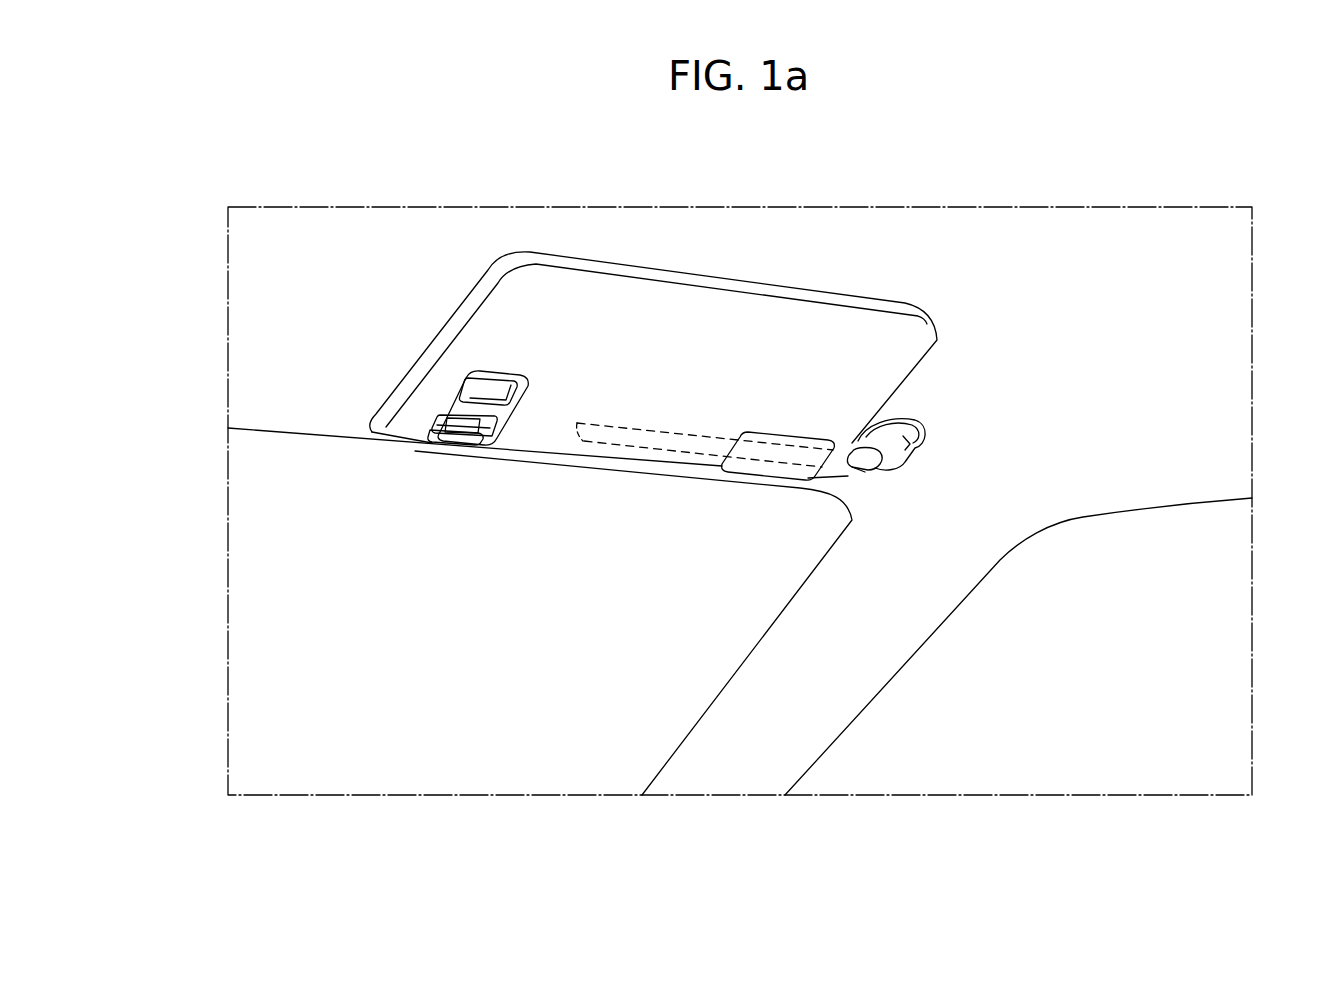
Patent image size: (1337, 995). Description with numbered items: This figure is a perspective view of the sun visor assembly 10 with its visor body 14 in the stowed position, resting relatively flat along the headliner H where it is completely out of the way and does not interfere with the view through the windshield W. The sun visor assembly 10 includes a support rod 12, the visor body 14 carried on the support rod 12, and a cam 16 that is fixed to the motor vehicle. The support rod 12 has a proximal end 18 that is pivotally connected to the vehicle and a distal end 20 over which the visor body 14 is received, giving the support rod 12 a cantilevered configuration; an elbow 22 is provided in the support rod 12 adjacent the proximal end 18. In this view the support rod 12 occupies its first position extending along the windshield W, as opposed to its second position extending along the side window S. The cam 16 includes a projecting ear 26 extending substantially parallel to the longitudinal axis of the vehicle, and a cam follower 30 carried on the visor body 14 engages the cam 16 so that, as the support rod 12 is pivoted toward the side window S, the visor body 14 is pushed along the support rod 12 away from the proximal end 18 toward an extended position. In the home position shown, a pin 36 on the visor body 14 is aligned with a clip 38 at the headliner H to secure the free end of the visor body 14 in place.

The sun visor assembly 10 is at (968, 290).
The support rod 12 is at (820, 478).
The visor body 14 is at (658, 322).
The cam 16 is at (903, 440).
The proximal end 18 is at (878, 453).
The distal end 20 is at (585, 436).
The elbow 22 is at (860, 472).
The projecting ear 26 is at (922, 428).
The cam follower 30 is at (760, 470).
The pin 36 is at (490, 392).
The clip 38 is at (455, 440).
The headliner H is at (300, 365).
The windshield W is at (310, 650).
The side window S is at (1165, 645).